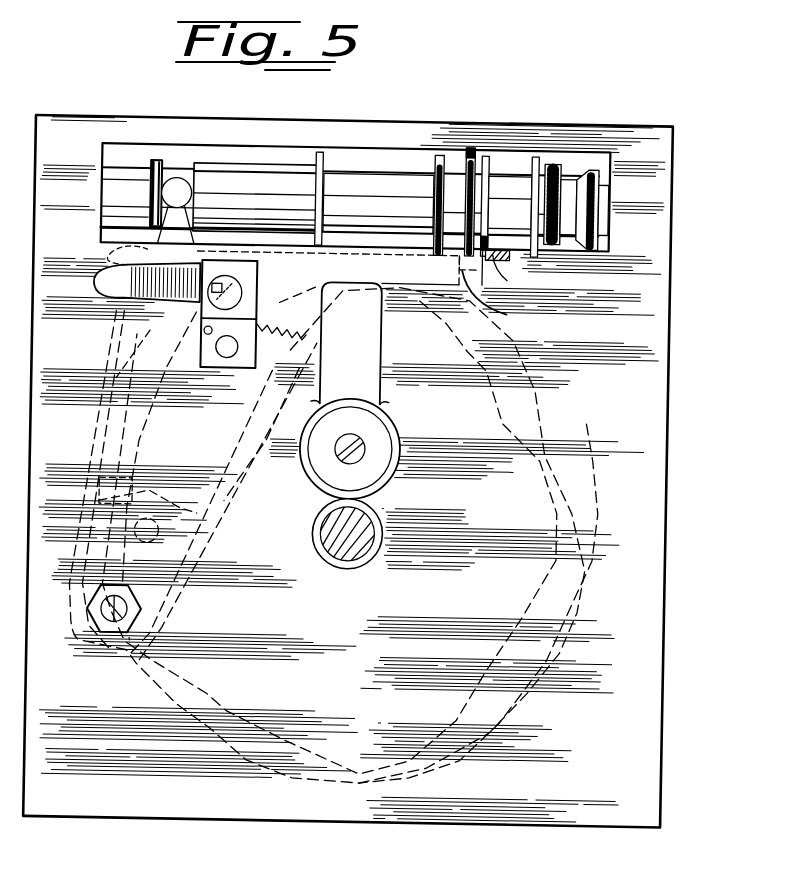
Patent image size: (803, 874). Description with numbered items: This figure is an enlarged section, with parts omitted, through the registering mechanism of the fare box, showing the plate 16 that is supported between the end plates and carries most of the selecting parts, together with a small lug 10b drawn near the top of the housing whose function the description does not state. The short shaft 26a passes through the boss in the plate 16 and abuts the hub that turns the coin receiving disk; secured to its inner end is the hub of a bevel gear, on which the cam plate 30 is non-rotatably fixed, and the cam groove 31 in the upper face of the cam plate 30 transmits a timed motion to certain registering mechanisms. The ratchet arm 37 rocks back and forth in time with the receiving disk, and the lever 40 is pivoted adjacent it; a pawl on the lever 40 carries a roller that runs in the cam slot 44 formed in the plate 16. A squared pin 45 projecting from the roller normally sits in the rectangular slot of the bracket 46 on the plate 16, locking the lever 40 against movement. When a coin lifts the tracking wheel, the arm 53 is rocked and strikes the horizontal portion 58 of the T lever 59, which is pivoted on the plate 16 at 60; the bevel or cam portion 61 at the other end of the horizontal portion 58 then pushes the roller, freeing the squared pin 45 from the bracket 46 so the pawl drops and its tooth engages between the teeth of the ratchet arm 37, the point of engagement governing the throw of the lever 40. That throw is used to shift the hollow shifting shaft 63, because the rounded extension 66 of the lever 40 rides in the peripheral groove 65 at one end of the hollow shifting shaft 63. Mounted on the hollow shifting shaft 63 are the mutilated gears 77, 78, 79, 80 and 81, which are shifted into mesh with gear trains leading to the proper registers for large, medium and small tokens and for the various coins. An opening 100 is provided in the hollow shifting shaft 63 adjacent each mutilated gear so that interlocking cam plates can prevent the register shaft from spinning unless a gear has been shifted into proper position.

The plate 16 is at (656, 435).
The short shaft 26a is at (373, 520).
The cam plate 30 is at (552, 385).
The cam groove 31 is at (571, 422).
The ratchet arm 37 is at (108, 430).
The lever 40 is at (141, 348).
The cam slot 44 is at (117, 277).
The squared pin 45 is at (259, 278).
The bracket 46 is at (268, 296).
The arm 53 is at (515, 275).
The horizontal portion 58 is at (499, 297).
The T lever 59 is at (367, 381).
The pivot 60 is at (367, 441).
The bevel or cam portion 61 is at (176, 213).
The hollow shifting shaft 63 is at (230, 168).
The peripheral groove 65 is at (176, 158).
The rounded extension 66 is at (155, 214).
The mutilated gear 77 is at (320, 150).
The mutilated gear 78 is at (437, 152).
The mutilated gear 79 is at (472, 140).
The mutilated gear 80 is at (489, 150).
The mutilated gear 81 is at (537, 150).
The opening 100 is at (332, 178).
The lug 10b is at (497, 247).